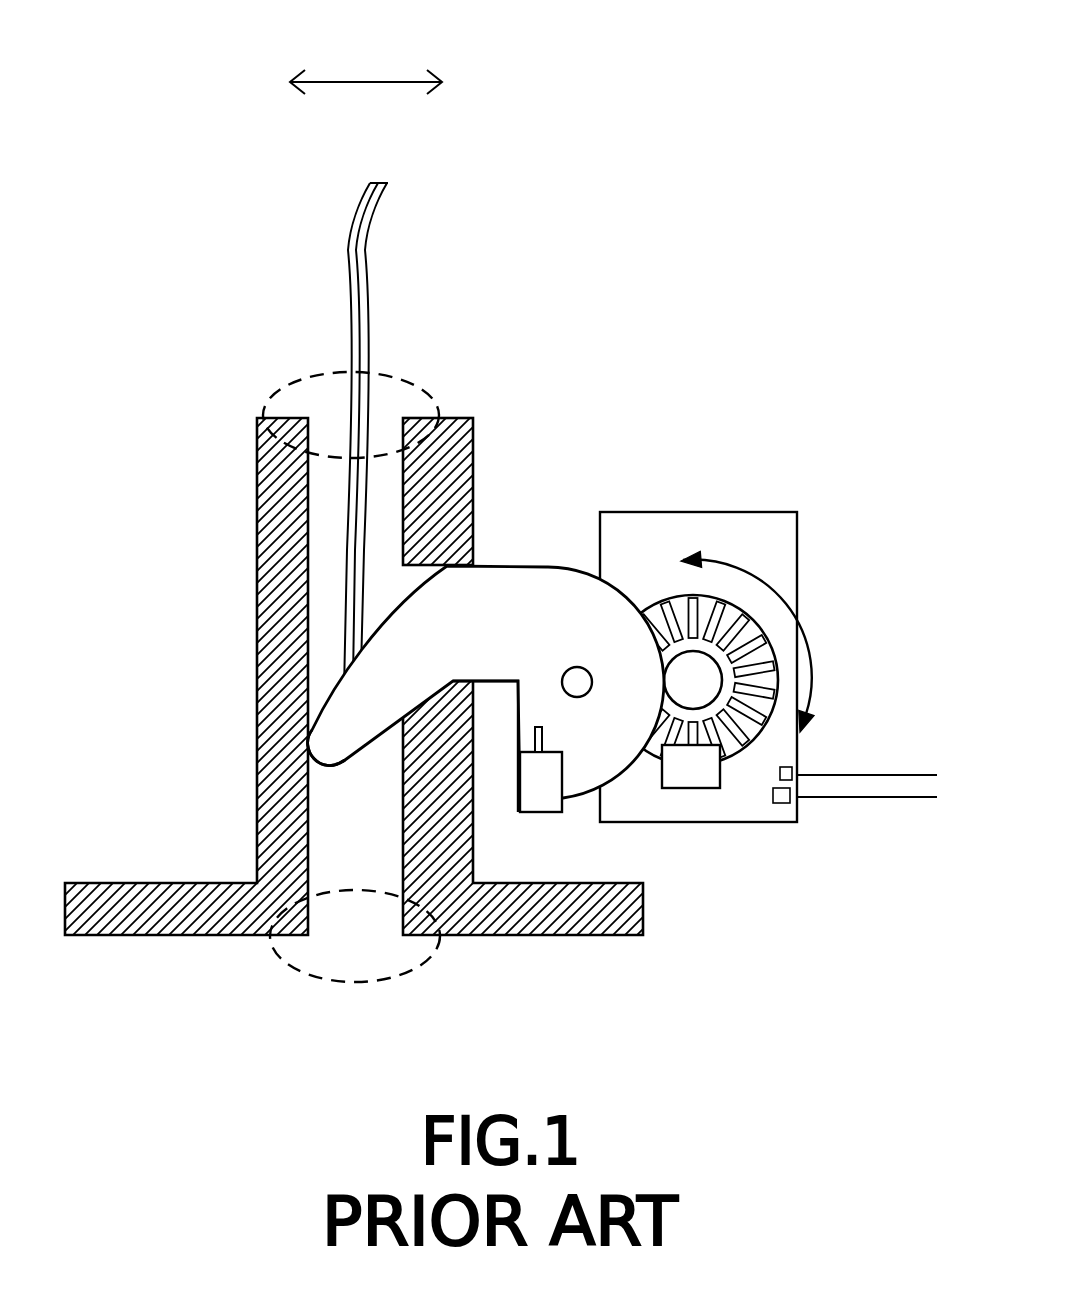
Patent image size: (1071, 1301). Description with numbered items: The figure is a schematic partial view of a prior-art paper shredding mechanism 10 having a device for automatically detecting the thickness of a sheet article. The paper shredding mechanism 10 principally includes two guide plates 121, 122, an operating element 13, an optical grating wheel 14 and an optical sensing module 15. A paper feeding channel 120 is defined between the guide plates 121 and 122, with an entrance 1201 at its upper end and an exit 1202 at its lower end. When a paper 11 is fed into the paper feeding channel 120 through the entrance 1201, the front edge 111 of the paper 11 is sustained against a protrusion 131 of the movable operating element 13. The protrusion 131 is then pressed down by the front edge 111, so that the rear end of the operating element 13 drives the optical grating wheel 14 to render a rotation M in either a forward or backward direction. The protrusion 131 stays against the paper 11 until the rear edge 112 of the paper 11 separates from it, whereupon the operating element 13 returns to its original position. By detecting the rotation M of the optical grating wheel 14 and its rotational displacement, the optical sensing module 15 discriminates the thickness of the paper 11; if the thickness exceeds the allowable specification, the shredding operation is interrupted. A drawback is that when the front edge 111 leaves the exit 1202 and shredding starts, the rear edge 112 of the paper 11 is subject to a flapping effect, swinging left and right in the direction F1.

The paper shredding mechanism 10 is at (893, 170).
The paper 11 is at (369, 268).
The front edge 111 is at (342, 643).
The rear edge 112 is at (354, 213).
The paper feeding channel 120 is at (420, 445).
The guide plate 121 is at (280, 522).
The guide plate 122 is at (440, 533).
The entrance 1201 is at (307, 375).
The exit 1202 is at (303, 968).
The operating element 13 is at (427, 647).
The protrusion 131 is at (338, 742).
The optical grating wheel 14 is at (673, 597).
The optical sensing module 15 is at (690, 770).
The rotation M is at (810, 648).
The direction F1 is at (368, 82).